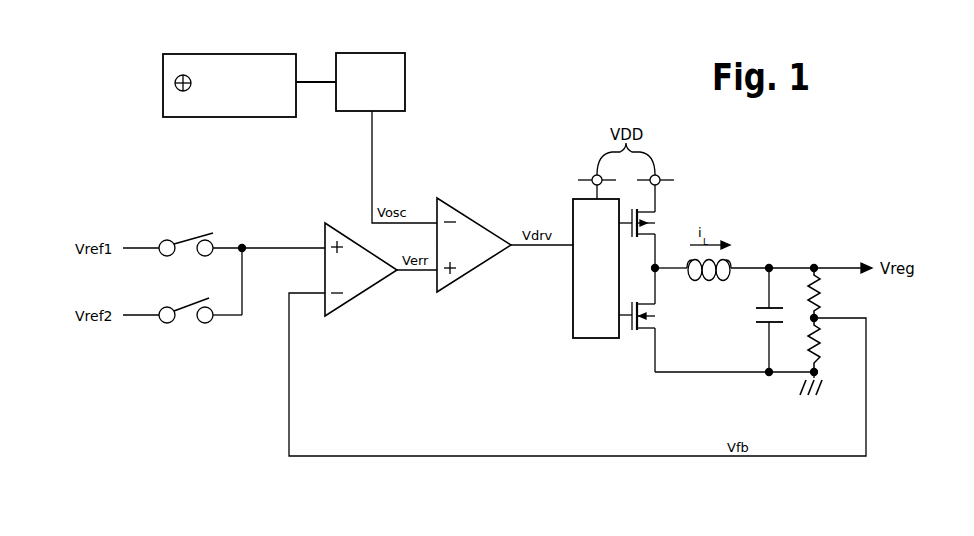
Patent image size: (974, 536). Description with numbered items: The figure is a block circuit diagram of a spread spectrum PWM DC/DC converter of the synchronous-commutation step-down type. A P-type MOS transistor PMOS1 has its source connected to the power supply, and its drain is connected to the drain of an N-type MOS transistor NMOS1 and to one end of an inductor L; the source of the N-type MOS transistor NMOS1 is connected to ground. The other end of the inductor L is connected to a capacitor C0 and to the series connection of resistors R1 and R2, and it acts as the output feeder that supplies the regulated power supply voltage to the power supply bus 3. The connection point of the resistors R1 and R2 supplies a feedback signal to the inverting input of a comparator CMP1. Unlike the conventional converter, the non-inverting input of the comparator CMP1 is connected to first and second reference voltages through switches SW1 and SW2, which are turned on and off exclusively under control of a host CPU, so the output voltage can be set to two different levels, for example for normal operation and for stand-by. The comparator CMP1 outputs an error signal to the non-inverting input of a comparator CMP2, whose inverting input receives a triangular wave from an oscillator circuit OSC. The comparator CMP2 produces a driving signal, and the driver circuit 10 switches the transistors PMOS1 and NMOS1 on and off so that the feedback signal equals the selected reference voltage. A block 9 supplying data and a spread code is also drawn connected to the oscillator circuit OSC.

The data and spread code generator 9 is at (248, 117).
The oscillator circuit OSC is at (405, 80).
The switch SW1 is at (185, 236).
The switch SW2 is at (188, 326).
The comparator CMP1 is at (358, 296).
The comparator CMP2 is at (481, 272).
The driver circuit 10 is at (573, 318).
The P-type MOS transistor PMOS1 is at (660, 229).
The N-type MOS transistor NMOS1 is at (660, 312).
The inductor L is at (731, 257).
The power supply bus 3 is at (784, 268).
The capacitor C0 is at (752, 314).
The resistor R1 is at (822, 290).
The resistor R2 is at (822, 345).